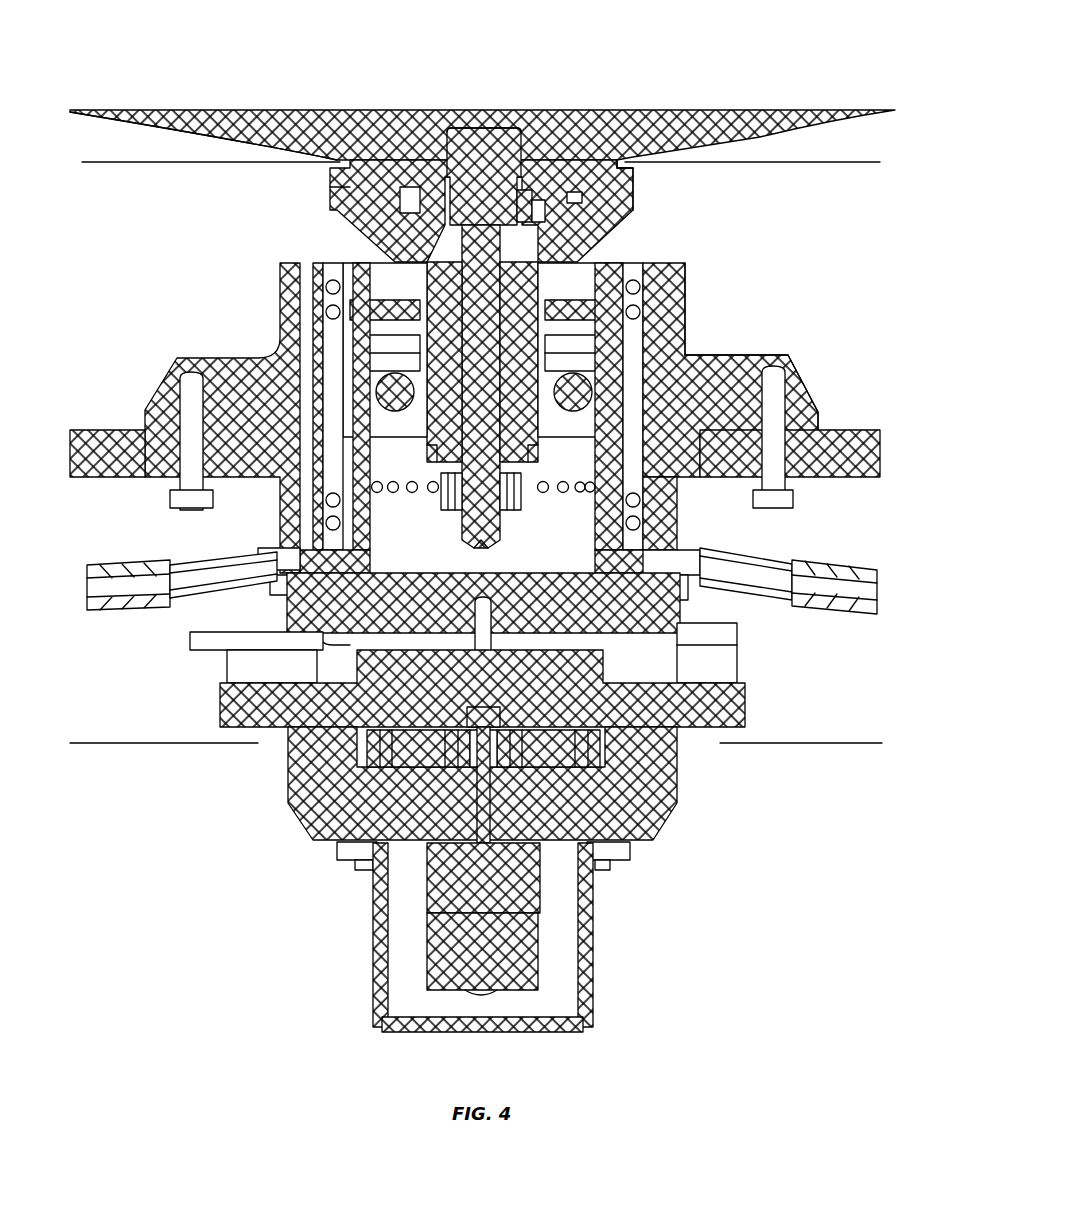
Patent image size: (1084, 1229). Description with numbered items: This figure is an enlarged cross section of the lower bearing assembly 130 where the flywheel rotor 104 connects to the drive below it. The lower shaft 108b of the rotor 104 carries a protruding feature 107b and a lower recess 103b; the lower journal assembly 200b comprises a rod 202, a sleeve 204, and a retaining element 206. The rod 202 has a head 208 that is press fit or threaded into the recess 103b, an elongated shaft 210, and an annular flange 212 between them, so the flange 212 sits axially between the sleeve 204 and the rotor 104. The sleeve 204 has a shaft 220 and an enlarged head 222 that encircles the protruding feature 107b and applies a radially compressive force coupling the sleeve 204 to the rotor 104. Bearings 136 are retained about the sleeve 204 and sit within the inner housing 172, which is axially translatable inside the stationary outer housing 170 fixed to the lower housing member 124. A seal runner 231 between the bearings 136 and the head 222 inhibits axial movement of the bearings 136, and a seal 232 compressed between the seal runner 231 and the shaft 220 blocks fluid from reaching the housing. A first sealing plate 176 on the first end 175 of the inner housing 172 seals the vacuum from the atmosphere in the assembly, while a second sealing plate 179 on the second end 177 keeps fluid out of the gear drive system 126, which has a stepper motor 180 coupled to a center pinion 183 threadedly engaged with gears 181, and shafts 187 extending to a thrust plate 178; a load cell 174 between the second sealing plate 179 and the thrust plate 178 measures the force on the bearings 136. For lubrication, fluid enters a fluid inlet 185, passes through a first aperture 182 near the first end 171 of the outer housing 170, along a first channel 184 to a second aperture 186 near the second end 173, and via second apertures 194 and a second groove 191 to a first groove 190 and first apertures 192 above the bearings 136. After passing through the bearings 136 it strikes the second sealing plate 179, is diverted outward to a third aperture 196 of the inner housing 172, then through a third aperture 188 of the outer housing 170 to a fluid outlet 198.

The lower recess 103b is at (463, 140).
The flywheel rotor 104 is at (690, 135).
The protruding feature 107b is at (420, 213).
The lower shaft 108b is at (337, 160).
The lower housing member 124 is at (860, 455).
The gear drive system 126 is at (607, 937).
The lower bearing assembly 130 is at (872, 286).
The bearings 136 is at (615, 345).
The outer housing 170 is at (803, 400).
The first end 171 is at (297, 628).
The inner housing 172 is at (695, 368).
The second end 173 is at (640, 300).
The load cell 174 is at (745, 705).
The first end 175 is at (650, 265).
The first sealing plate 176 is at (587, 293).
The second end 177 is at (590, 715).
The thrust plate 178 is at (675, 758).
The second sealing plate 179 is at (700, 583).
The stepper motor 180 is at (520, 970).
The gears 181 is at (650, 787).
The first aperture 182 is at (277, 590).
The center pinion 183 is at (493, 755).
The first channel 184 is at (303, 505).
The fluid inlet 185 is at (110, 610).
The second aperture 186 is at (318, 345).
The shafts 187 is at (465, 765).
The third aperture 188 is at (708, 541).
The first groove 190 is at (327, 328).
The second groove 191 is at (700, 480).
The first apertures 192 is at (630, 403).
The second apertures 194 is at (700, 450).
The third aperture 196 is at (700, 593).
The fluid outlet 198 is at (863, 613).
The lower journal assembly 200b is at (688, 183).
The rod 202 is at (442, 132).
The sleeve 204 is at (640, 190).
The retaining element 206 is at (445, 485).
The head 208 is at (480, 150).
The elongated shaft 210 is at (507, 200).
The annular flange 212 is at (535, 213).
The shaft 220 is at (425, 272).
The enlarged head 222 is at (598, 200).
The seal runner 231 is at (355, 273).
The seal 232 is at (425, 258).